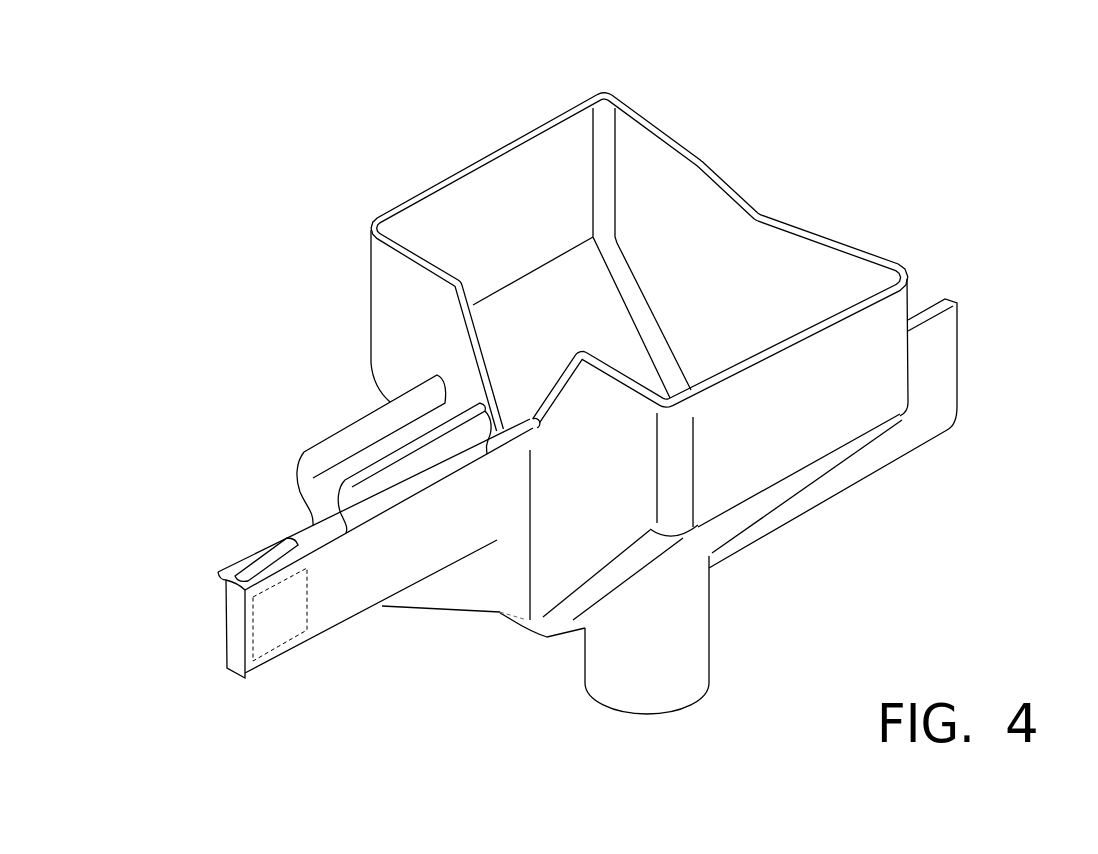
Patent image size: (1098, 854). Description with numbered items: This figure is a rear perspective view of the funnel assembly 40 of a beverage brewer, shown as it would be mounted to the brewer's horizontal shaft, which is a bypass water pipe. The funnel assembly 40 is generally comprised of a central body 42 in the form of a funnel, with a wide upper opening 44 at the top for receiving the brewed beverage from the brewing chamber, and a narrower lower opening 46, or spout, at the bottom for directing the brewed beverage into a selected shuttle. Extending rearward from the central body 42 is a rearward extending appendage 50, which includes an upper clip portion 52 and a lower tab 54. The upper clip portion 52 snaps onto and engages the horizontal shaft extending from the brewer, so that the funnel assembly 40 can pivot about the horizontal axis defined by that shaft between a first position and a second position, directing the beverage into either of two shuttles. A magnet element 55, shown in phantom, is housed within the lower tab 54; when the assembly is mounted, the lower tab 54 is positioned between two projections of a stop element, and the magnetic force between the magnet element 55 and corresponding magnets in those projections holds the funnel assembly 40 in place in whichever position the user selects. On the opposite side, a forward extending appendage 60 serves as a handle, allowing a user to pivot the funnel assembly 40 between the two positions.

The funnel assembly 40 is at (305, 147).
The central body 42 is at (802, 427).
The wide upper opening 44 is at (542, 128).
The lower opening 46 is at (698, 702).
The rearward extending appendage 50 is at (360, 573).
The upper clip portion 52 is at (328, 443).
The lower tab 54 is at (250, 670).
The magnet element 55 is at (290, 622).
The forward extending appendage 60 is at (950, 360).